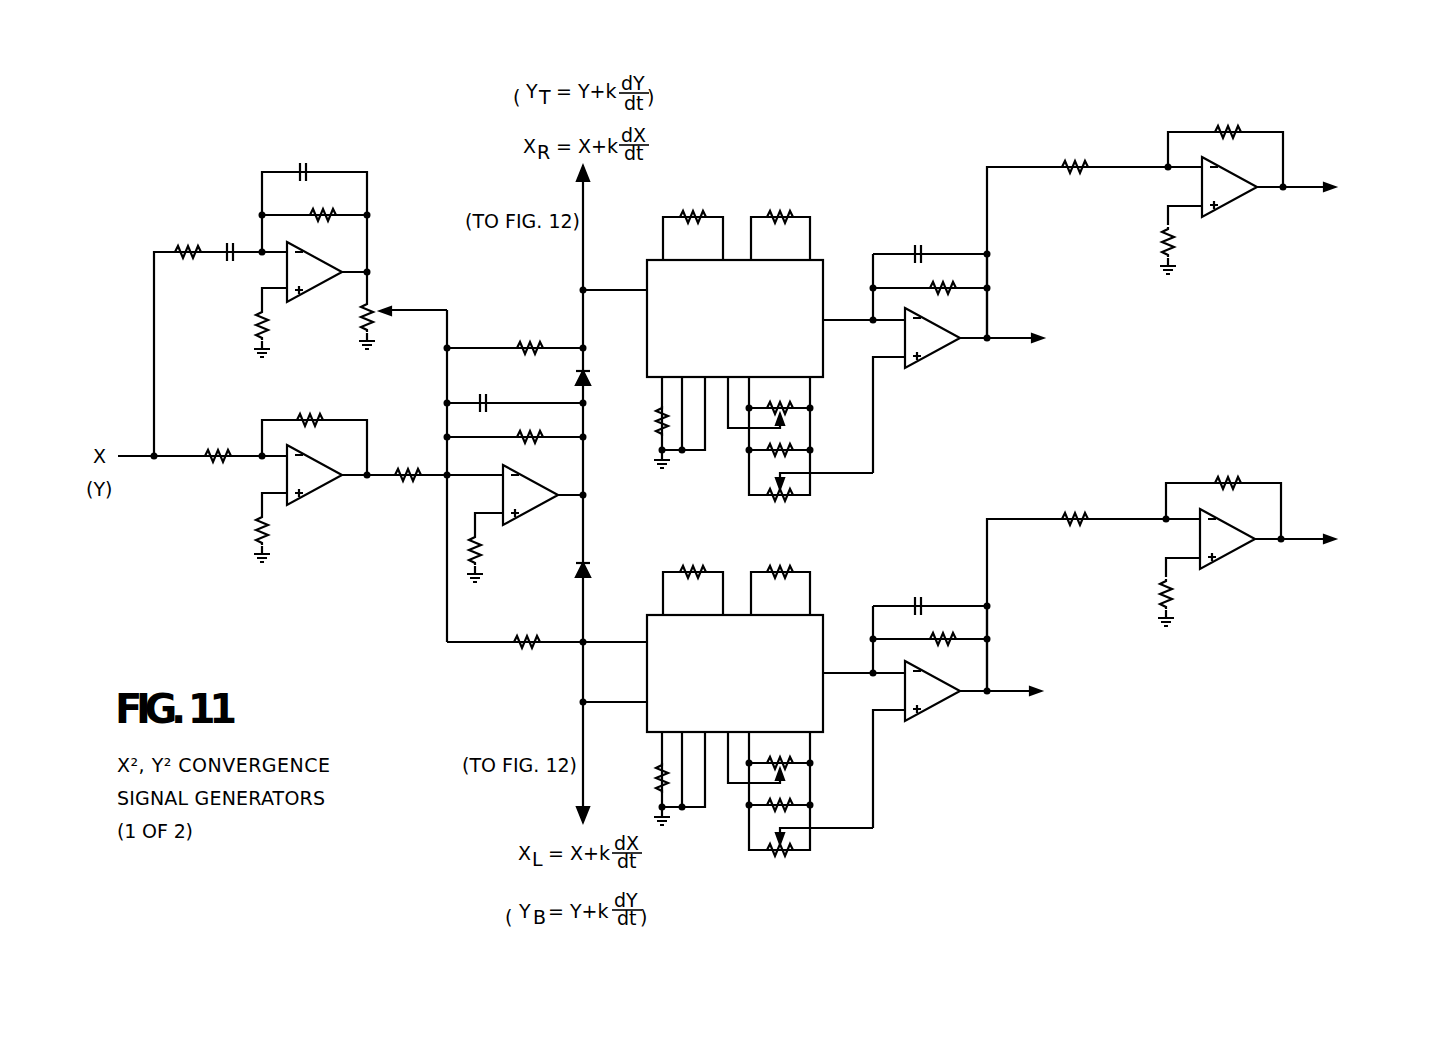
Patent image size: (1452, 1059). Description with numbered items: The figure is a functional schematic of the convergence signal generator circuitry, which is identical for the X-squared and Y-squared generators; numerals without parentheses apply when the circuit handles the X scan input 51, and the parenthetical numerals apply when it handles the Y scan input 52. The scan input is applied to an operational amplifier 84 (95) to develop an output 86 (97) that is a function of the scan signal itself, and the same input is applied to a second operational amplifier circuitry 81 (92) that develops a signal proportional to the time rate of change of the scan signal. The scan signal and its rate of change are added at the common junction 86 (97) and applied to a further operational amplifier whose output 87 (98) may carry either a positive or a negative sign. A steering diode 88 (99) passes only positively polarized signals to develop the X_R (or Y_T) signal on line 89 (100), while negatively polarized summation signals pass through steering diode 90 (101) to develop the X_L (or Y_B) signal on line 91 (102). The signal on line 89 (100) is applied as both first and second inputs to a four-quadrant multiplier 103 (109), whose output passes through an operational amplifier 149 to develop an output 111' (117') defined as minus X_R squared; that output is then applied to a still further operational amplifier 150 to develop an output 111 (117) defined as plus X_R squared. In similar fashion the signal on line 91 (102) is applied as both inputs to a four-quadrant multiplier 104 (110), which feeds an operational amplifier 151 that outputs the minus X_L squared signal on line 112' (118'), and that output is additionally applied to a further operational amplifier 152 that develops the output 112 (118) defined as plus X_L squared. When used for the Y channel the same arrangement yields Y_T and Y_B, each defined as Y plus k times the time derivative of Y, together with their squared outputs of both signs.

The X scan input 51 is at (200, 351).
The Y scan input 52 is at (136, 454).
The second operational amplifier circuitry 81 is at (350, 269).
The second operational amplifier circuitry 92 is at (318, 300).
The operational amplifier 84 is at (300, 494).
The operational amplifier 95 is at (324, 502).
The common junction 86 is at (491, 476).
The common junction 97 is at (438, 487).
The output of further operational amplifier 87 is at (527, 523).
The output of further operational amplifier 98 is at (563, 498).
The steering diode 88 is at (546, 370).
The steering diode 99 is at (576, 380).
The line 89 is at (570, 294).
The line 100 is at (580, 306).
The steering diode 90 is at (608, 533).
The steering diode 101 is at (588, 561).
The line 91 is at (547, 671).
The line 102 is at (580, 676).
The four-quadrant multiplier 103 is at (776, 339).
The four-quadrant multiplier 109 is at (824, 260).
The four-quadrant multiplier 104 is at (776, 694).
The four-quadrant multiplier 110 is at (824, 615).
The output 111 is at (1361, 190).
The output 117 is at (1361, 190).
The output 111' is at (1067, 341).
The output 117' is at (1067, 341).
The output 112 is at (1358, 544).
The output 118 is at (1358, 544).
The line 112' is at (1066, 695).
The line 118' is at (1066, 695).
The operational amplifier 149 is at (930, 360).
The operational amplifier 150 is at (1224, 210).
The operational amplifier 151 is at (922, 712).
The operational amplifier 152 is at (1220, 562).